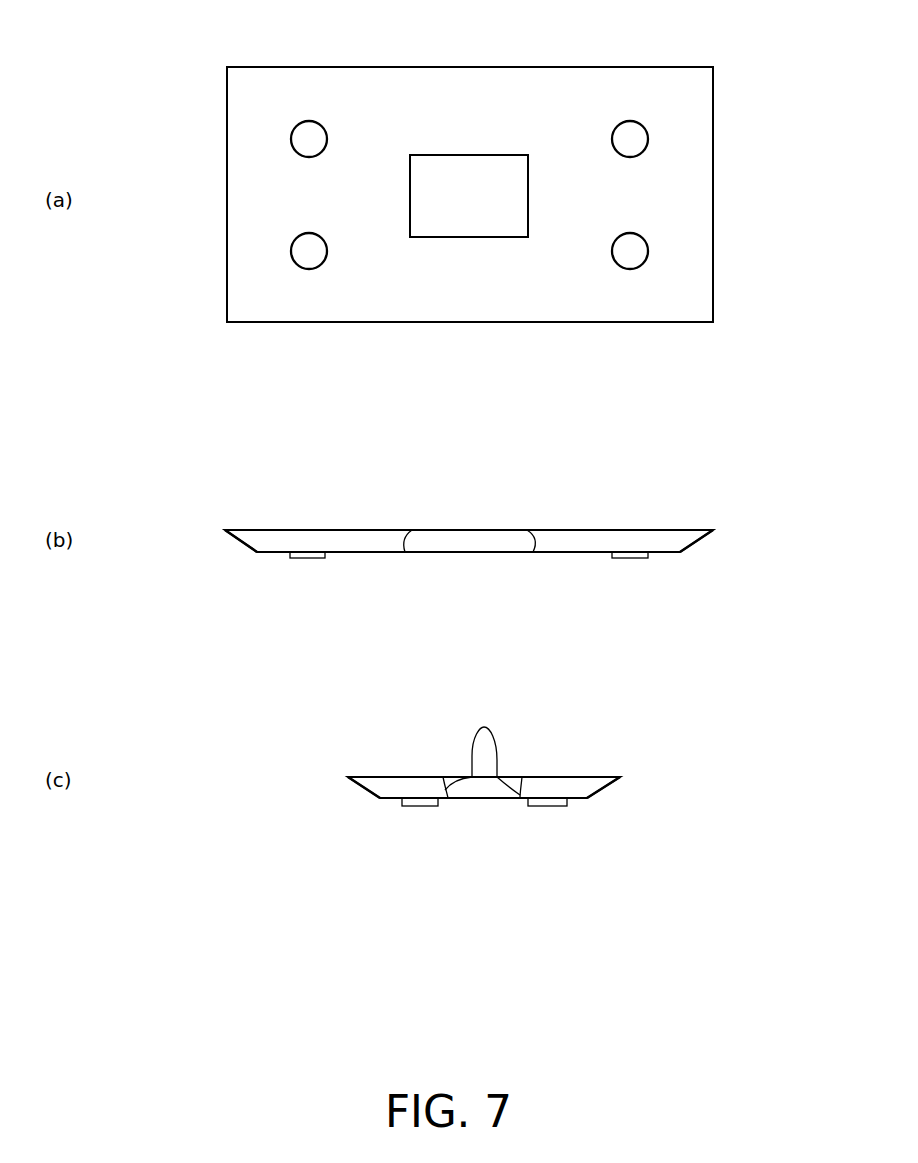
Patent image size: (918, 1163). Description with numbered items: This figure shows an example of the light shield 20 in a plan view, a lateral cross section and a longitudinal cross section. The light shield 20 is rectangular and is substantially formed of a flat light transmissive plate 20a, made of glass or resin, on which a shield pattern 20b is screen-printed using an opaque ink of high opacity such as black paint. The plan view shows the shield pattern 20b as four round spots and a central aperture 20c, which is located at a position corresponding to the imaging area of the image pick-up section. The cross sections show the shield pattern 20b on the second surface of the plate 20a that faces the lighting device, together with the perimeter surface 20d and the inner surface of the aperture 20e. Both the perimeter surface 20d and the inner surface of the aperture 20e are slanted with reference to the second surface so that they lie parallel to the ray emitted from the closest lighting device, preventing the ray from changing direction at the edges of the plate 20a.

The light shield 20 is at (612, 62).
The flat transparent plate 20a is at (402, 87).
The shield pattern 20b is at (309, 139).
The aperture 20c is at (470, 238).
The perimeter surface 20d is at (242, 540).
The inner surface of the aperture 20e is at (423, 530).